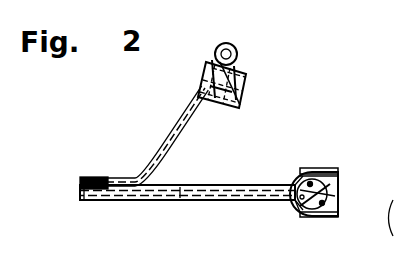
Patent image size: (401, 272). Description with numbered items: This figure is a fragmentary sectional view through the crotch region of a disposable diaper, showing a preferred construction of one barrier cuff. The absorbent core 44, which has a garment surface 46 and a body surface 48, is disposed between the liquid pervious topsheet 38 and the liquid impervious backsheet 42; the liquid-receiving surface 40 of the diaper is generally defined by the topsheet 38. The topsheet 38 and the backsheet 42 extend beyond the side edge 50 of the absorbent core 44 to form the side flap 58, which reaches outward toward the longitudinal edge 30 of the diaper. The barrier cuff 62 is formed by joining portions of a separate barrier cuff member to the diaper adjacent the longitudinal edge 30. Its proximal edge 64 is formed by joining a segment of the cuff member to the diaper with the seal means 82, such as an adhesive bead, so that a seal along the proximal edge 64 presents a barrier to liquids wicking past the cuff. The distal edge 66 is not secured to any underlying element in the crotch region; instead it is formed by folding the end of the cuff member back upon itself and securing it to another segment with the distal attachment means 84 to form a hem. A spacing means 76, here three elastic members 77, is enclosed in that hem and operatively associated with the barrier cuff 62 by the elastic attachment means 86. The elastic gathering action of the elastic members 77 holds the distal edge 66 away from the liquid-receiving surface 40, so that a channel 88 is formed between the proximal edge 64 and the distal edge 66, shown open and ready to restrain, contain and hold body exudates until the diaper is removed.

The longitudinal edge 30 is at (78, 187).
The topsheet 38 is at (335, 172).
The liquid-receiving surface 40 is at (297, 176).
The backsheet 42 is at (294, 206).
The absorbent core 44 is at (322, 195).
The garment surface 46 is at (331, 217).
The body surface 48 is at (322, 170).
The side edge 50 is at (296, 198).
The side flap 58 is at (181, 200).
The barrier cuff 62 is at (160, 137).
The proximal edge 64 is at (82, 180).
The distal edge 66 is at (237, 57).
The spacing means 76 is at (212, 78).
The elastic members 77 is at (235, 83).
The seal means 82 is at (110, 200).
The distal attachment means 84 is at (200, 99).
The elastic attachment means 86 is at (210, 86).
The channel 88 is at (172, 170).